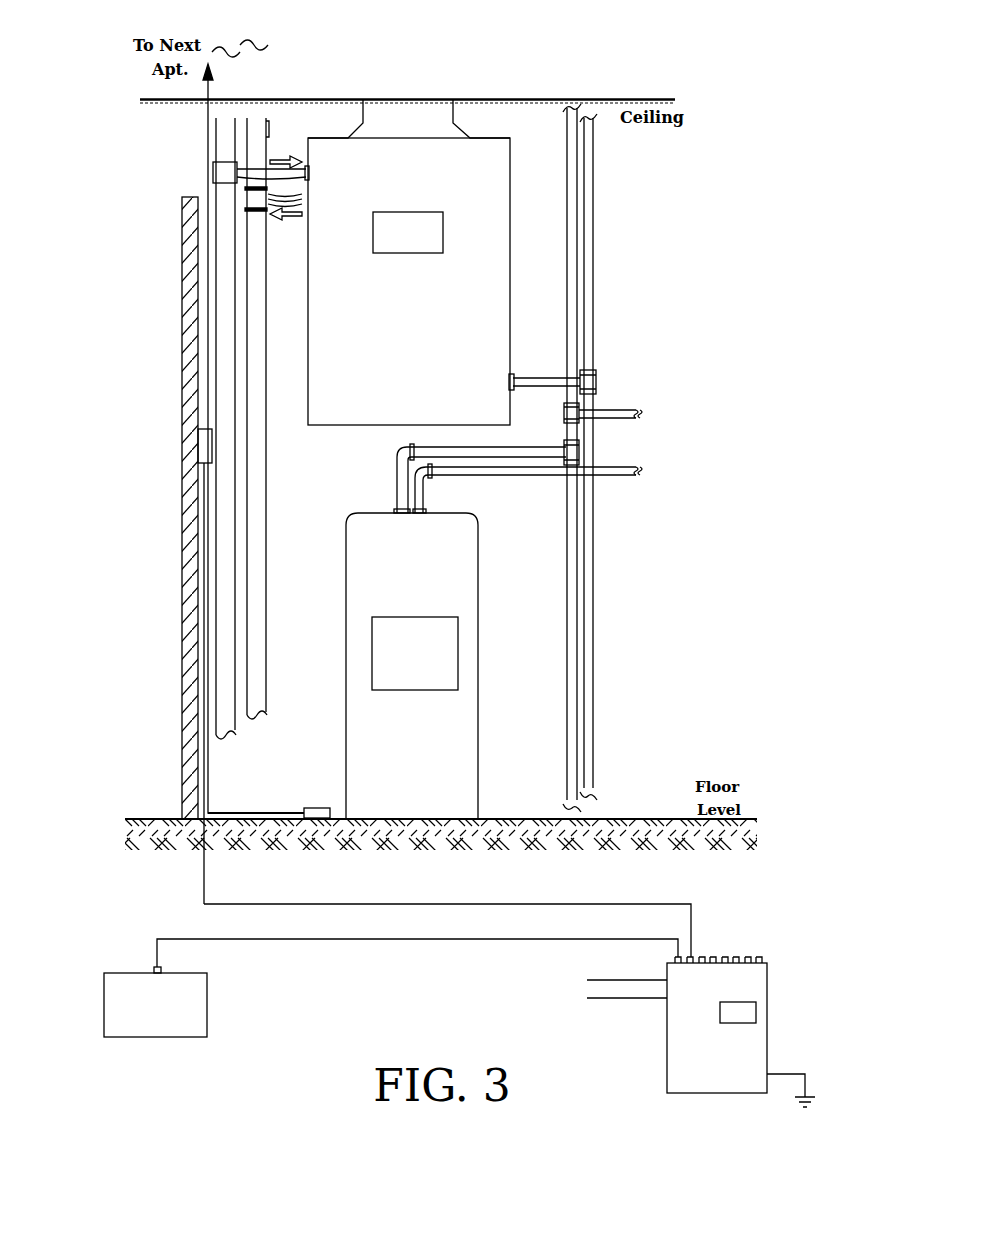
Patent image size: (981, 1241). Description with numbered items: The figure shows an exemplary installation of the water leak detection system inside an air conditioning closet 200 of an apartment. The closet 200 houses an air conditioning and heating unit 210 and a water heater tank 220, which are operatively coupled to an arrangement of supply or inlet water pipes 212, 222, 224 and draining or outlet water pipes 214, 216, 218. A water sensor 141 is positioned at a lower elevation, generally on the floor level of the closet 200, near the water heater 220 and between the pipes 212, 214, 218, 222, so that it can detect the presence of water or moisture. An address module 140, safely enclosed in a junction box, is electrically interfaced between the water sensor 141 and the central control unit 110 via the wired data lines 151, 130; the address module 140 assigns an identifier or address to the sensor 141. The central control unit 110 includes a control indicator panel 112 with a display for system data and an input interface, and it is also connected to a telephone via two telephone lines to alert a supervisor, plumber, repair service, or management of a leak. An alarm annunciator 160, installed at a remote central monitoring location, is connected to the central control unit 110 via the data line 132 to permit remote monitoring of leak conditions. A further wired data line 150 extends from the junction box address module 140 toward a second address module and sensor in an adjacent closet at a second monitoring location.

The air conditioning closet 200 is at (572, 76).
The air conditioning and heating unit 210 is at (509, 250).
The supply water pipe 212 is at (228, 117).
The outlet water pipe 214 is at (267, 578).
The outlet water pipe 216 is at (543, 387).
The outlet water pipe 218 is at (593, 280).
The water heater tank 220 is at (478, 583).
The supply water pipe 222 is at (567, 140).
The supply water pipe 224 is at (397, 490).
The wired data line 150 is at (207, 167).
The wired data line 151 is at (240, 812).
The address module 140 is at (198, 452).
The water sensor 141 is at (310, 808).
The wired data line 130 is at (433, 904).
The data line 132 is at (436, 940).
The alarm annunciator 160 is at (128, 972).
The central control unit 110 is at (667, 1046).
The control indicator panel 112 is at (743, 1010).